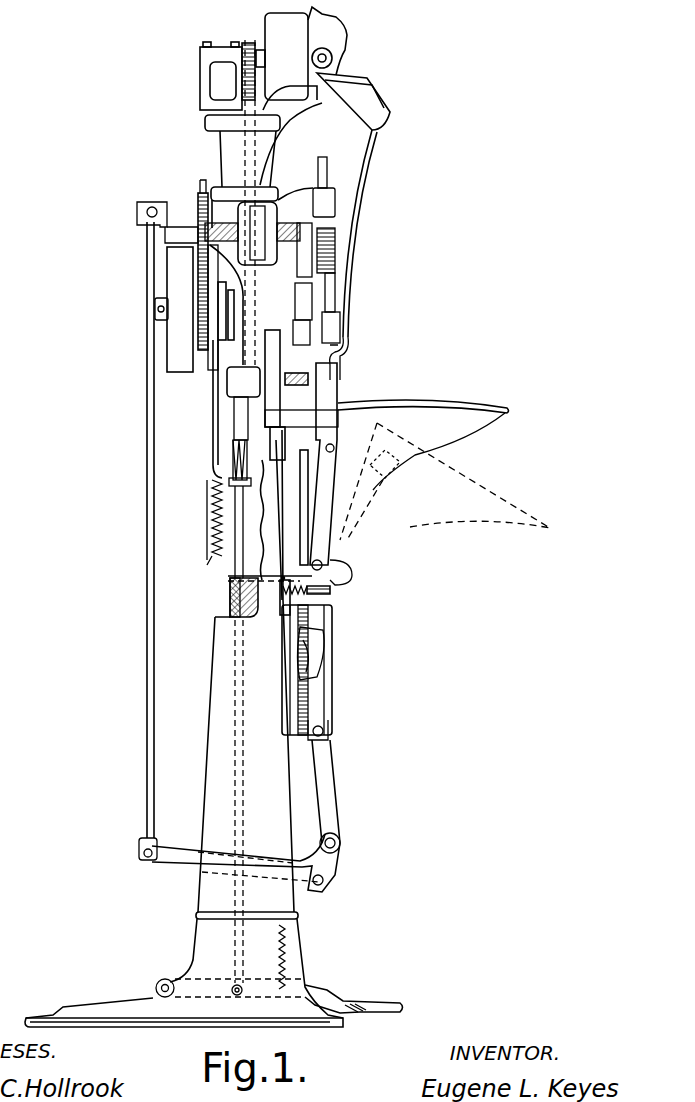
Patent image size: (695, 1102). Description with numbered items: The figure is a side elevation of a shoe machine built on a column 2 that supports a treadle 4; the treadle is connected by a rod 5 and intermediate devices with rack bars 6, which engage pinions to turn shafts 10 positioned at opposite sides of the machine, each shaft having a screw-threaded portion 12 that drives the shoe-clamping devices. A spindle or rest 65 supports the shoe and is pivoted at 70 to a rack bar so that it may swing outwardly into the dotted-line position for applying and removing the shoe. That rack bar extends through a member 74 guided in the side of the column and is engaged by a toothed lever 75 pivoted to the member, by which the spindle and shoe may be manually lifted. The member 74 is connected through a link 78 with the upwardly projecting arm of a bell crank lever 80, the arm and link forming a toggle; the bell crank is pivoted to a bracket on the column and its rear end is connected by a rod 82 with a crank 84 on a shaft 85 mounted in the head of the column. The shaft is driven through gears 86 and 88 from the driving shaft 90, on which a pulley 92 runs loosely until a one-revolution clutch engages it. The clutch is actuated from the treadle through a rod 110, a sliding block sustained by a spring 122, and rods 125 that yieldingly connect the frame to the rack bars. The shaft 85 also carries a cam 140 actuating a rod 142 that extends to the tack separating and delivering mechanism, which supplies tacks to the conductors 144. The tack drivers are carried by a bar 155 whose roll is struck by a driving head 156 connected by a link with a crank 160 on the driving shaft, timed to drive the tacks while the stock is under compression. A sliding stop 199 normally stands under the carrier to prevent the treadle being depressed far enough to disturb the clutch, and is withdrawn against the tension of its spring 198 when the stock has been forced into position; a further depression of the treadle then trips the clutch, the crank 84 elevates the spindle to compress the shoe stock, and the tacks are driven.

The column 2 is at (290, 822).
The treadle 4 is at (355, 1003).
The rod 5 is at (236, 606).
The rack bars 6 is at (236, 423).
The shafts 10 is at (252, 398).
The screw-threaded portion 12 is at (293, 412).
The spindle or rest 65 is at (328, 503).
The pivot 70 is at (330, 565).
The member 74 is at (323, 703).
The toothed lever 75 is at (315, 642).
The link 78 is at (335, 783).
The bell crank lever 80 is at (333, 863).
The rod 82 is at (147, 688).
The crank 84 is at (158, 203).
The shaft 85 is at (185, 230).
The gear 86 is at (203, 193).
The gear 88 is at (196, 271).
The driving shaft 90 is at (158, 310).
The pulley 92 is at (180, 340).
The rod 110 is at (214, 490).
The spring 122 is at (212, 522).
The rods 125 is at (245, 448).
The cam 140 is at (240, 215).
The rod 142 is at (258, 143).
The conductors 144 is at (350, 340).
The bar 155 is at (328, 293).
The driving head 156 is at (335, 262).
The crank 160 is at (307, 303).
The spring 198 is at (307, 592).
The sliding stop 199 is at (345, 577).